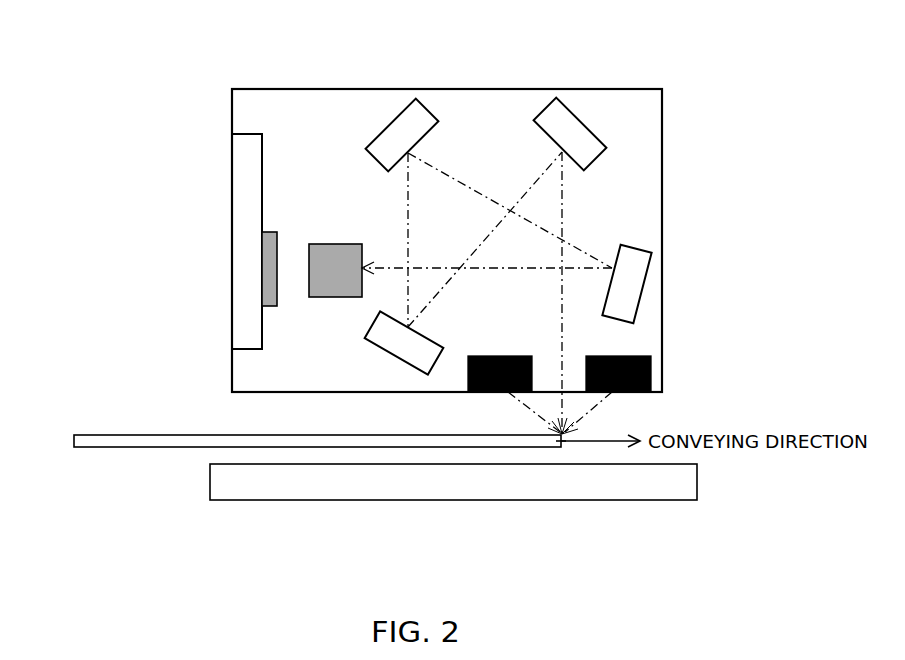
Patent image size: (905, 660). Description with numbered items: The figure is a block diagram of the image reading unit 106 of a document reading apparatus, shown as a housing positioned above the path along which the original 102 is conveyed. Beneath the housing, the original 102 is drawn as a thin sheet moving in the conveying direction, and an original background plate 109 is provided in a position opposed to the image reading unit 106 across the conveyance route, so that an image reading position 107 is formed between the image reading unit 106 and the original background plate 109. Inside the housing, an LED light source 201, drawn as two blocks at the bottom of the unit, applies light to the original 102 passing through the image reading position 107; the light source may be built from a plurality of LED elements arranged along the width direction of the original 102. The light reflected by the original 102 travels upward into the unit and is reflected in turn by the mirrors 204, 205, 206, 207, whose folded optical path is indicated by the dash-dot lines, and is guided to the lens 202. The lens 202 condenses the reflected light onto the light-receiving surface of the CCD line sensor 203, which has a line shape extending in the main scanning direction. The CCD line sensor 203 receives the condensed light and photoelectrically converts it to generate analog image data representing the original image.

The image reading unit 106 is at (517, 89).
The original 102 is at (130, 447).
The image reading position 107 is at (561, 447).
The original background plate 109 is at (312, 485).
The LED light source 201 is at (518, 356).
The lens 202 is at (323, 244).
The CCD line sensor 203 is at (266, 270).
The mirror 204 is at (590, 130).
The mirror 205 is at (383, 352).
The mirror 206 is at (398, 118).
The mirror 207 is at (646, 282).